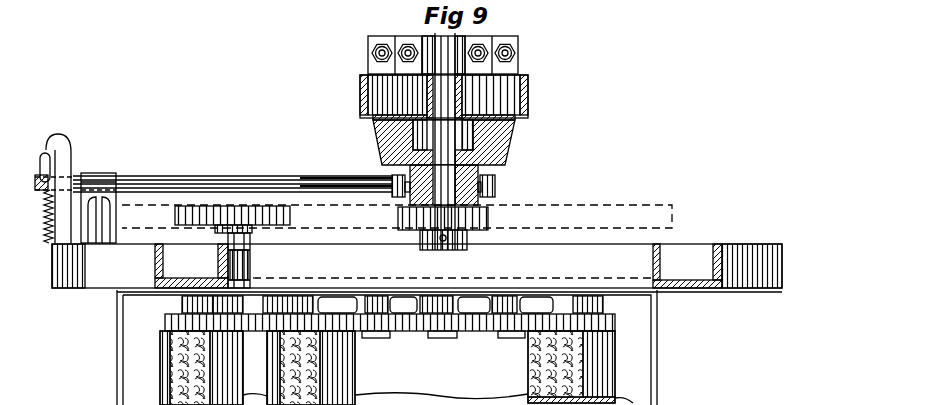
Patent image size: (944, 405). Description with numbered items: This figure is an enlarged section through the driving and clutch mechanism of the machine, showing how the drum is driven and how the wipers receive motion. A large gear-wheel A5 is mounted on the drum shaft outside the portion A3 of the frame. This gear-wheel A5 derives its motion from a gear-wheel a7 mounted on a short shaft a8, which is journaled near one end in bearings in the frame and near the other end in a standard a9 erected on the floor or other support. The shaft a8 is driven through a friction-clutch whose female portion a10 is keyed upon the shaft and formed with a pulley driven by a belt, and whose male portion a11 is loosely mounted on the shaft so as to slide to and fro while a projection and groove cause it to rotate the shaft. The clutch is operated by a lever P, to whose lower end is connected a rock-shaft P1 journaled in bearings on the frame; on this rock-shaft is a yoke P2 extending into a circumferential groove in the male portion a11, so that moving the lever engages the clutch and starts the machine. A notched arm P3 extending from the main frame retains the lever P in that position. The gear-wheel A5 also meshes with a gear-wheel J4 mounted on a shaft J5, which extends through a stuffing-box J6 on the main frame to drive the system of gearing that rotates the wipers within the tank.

The standard a9 is at (518, 44).
The female portion of friction-clutch a10 is at (528, 100).
The male portion of friction-clutch a11 is at (507, 165).
The short shaft a8 is at (496, 172).
The gear-wheel a7 is at (477, 210).
The gear-wheel A5 is at (610, 207).
The frame portion A3 is at (417, 266).
The lever P is at (44, 142).
The rock-shaft P1 is at (193, 183).
The yoke P2 is at (393, 175).
The notched arm P3 is at (68, 158).
The gear-wheel J4 is at (177, 212).
The shaft J5 is at (236, 258).
The stuffing-box J6 is at (253, 268).